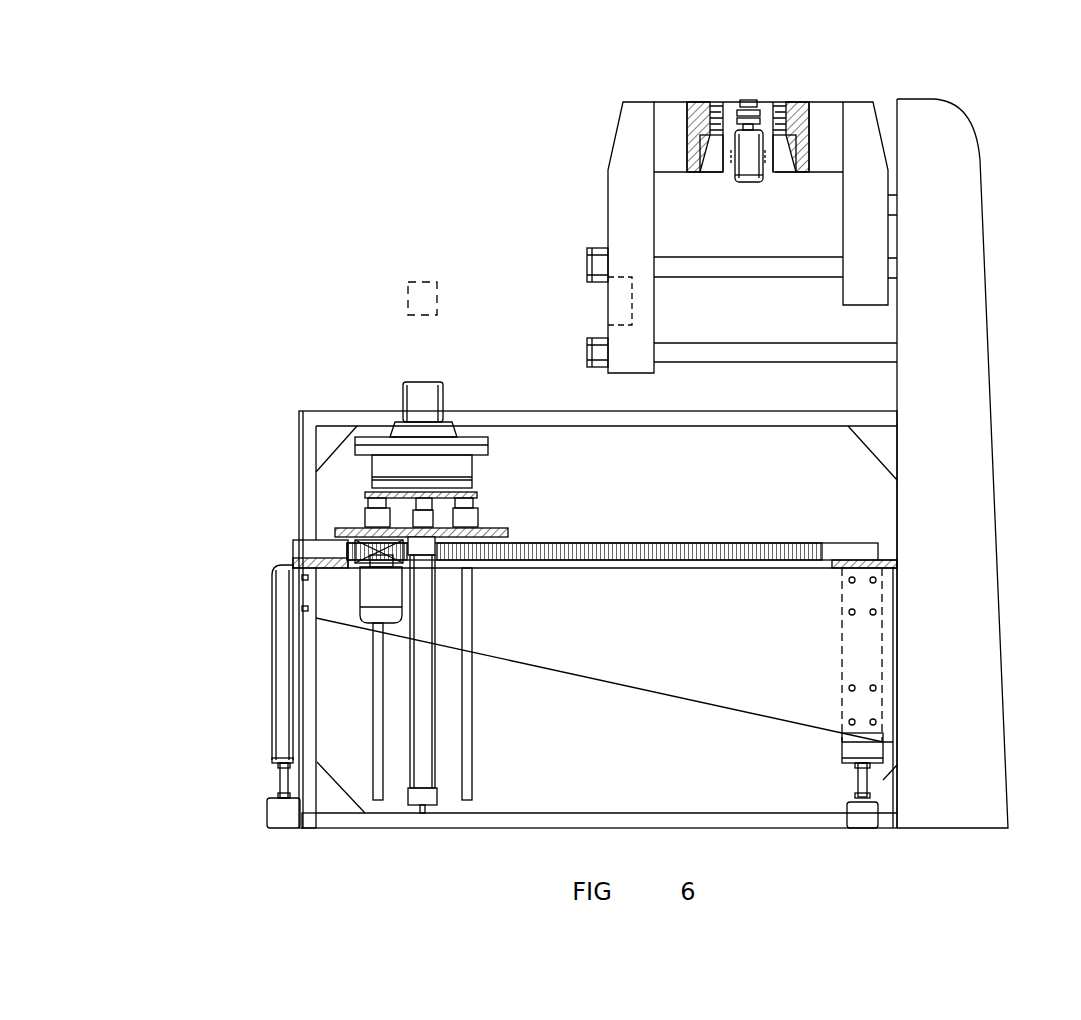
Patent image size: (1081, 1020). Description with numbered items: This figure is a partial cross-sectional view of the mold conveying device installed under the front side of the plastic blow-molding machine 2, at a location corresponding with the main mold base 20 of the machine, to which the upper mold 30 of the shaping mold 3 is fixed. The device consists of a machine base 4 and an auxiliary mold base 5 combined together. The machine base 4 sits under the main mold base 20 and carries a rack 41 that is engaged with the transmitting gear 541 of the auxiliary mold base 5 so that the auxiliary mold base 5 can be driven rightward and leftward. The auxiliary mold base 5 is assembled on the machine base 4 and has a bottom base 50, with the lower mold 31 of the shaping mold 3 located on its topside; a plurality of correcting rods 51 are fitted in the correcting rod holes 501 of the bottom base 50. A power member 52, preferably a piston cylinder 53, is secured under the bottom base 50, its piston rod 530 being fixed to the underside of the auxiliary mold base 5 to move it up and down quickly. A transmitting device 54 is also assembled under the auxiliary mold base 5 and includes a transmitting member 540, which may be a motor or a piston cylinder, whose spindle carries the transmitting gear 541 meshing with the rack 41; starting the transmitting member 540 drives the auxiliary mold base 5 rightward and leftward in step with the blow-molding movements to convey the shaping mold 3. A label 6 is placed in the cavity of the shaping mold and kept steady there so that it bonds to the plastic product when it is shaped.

The plastic blow-molding machine 2 is at (931, 104).
The shaping mold 3 is at (764, 198).
The machine base 4 is at (278, 703).
The auxiliary mold base 5 is at (342, 522).
The label 6 is at (407, 288).
The main mold base 20 is at (870, 175).
The upper mold 30 is at (792, 102).
The lower mold 31 is at (403, 383).
The rack 41 is at (760, 538).
The bottom base 50 is at (508, 532).
The correcting rod 51 is at (377, 752).
The power member 52 is at (437, 760).
The piston cylinder 53 is at (423, 688).
The transmitting device 54 is at (274, 587).
The correcting rod hole 501 is at (363, 497).
The piston rod 530 is at (428, 505).
The transmitting member 540 is at (370, 592).
The transmitting gear 541 is at (335, 538).